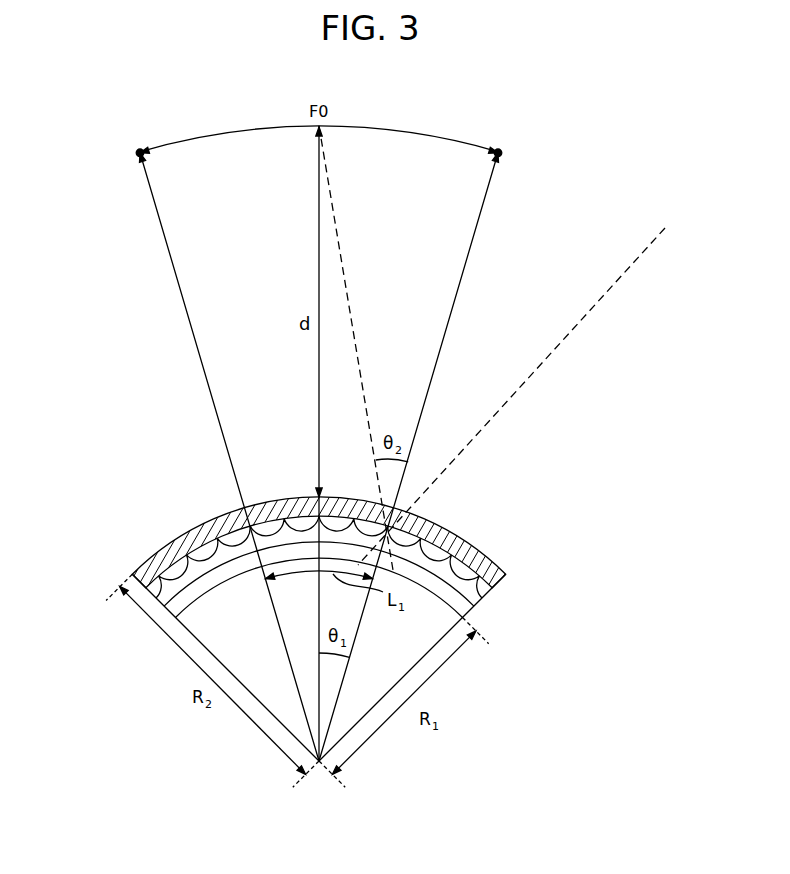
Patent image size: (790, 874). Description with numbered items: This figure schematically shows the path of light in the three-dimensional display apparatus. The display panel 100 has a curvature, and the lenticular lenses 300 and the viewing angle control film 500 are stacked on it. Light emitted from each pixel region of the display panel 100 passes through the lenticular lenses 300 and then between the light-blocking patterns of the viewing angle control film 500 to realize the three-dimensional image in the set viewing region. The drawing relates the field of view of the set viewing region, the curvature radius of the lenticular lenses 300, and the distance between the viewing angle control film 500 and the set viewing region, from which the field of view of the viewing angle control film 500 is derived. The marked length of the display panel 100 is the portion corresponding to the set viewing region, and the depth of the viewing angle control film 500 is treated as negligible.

The display panel 100 is at (478, 614).
The lenticular lenses 300 is at (158, 572).
The viewing angle control film 500 is at (507, 575).